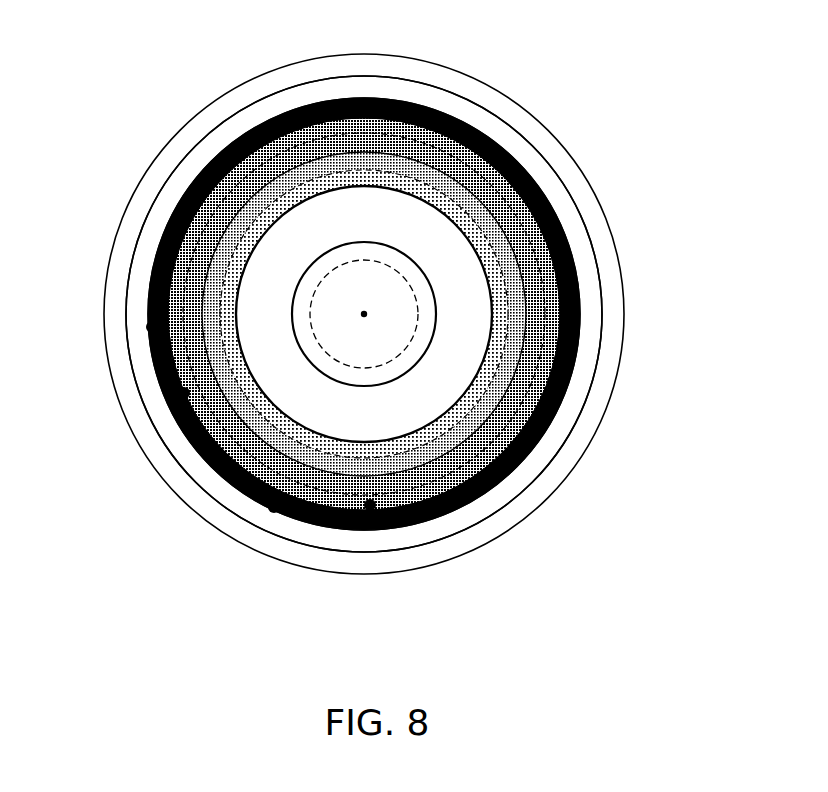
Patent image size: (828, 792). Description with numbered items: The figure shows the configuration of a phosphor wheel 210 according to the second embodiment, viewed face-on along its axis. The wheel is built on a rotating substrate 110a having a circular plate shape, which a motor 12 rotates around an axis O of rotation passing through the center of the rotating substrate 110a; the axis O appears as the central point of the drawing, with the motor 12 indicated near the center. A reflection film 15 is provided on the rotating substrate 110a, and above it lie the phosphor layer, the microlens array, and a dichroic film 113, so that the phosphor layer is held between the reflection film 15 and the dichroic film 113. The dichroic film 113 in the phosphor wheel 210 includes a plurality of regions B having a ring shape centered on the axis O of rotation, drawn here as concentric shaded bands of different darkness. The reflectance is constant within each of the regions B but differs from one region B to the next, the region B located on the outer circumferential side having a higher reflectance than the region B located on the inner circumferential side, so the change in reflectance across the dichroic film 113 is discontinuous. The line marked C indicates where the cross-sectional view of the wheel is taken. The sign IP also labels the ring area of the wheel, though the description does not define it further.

The phosphor wheel 210 is at (393, 319).
The rotating substrate 110a is at (612, 373).
The reflection film 15 is at (500, 132).
The dichroic film 113 is at (533, 183).
The inner pole region IP is at (215, 460).
The regions B is at (158, 275).
The line C- C is at (163, 312).
The motor 12 is at (418, 302).
The axis of rotation O is at (364, 313).